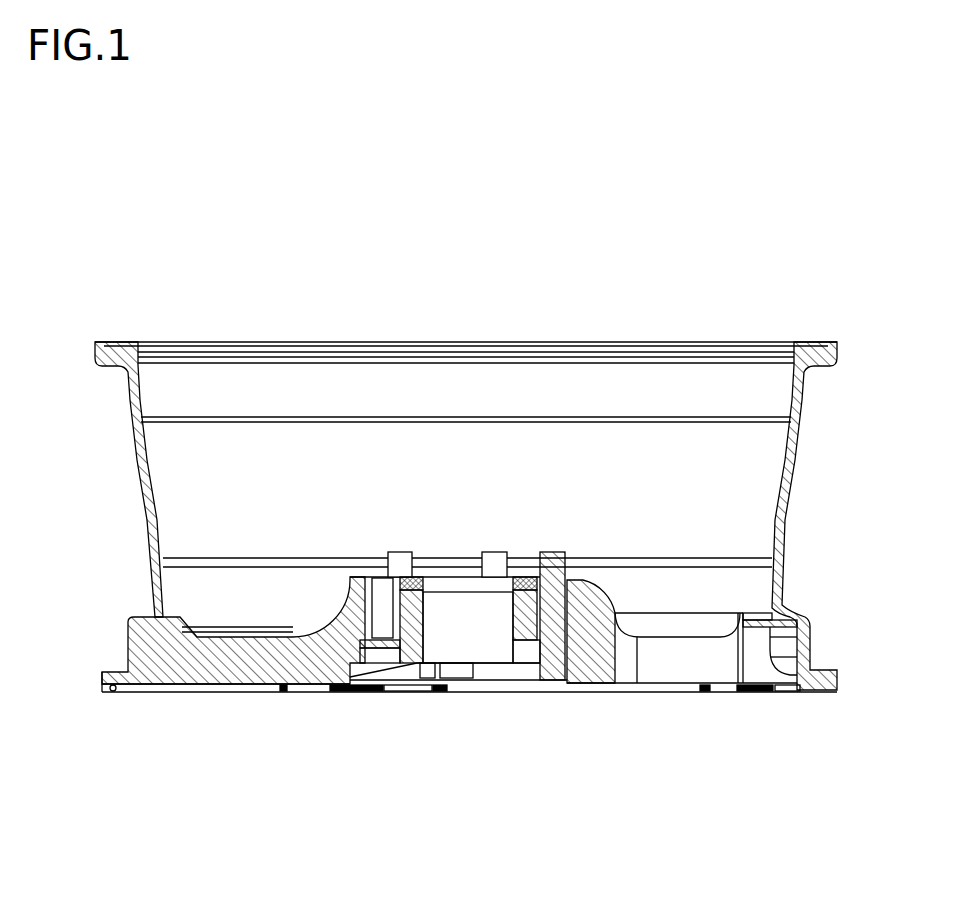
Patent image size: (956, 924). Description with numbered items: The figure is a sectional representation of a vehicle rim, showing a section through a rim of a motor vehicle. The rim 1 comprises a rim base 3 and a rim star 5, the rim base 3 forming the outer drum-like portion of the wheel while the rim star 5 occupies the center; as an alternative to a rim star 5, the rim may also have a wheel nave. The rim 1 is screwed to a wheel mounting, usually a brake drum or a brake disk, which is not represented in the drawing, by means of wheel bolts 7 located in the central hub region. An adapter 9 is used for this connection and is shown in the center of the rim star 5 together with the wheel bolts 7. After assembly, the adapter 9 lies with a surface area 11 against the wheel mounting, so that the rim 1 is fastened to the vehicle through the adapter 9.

The rim 1 is at (722, 716).
The rim base 3 is at (800, 468).
The rim star 5 is at (225, 668).
The wheel bolts 7 is at (565, 690).
The adapter 9 is at (427, 602).
The surface area 11 is at (523, 580).